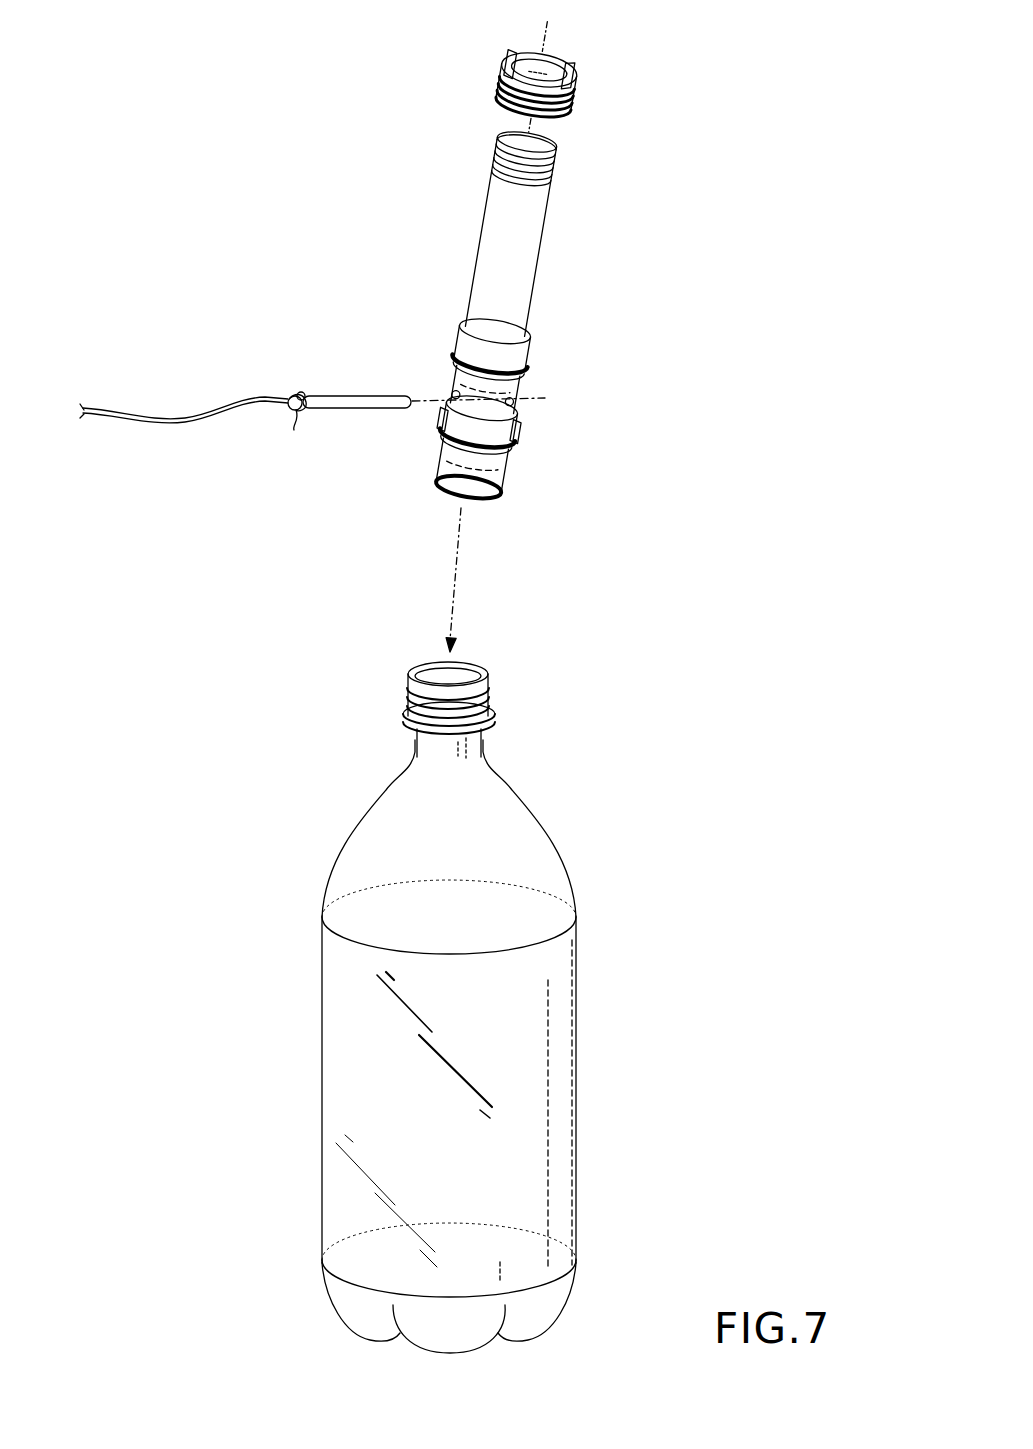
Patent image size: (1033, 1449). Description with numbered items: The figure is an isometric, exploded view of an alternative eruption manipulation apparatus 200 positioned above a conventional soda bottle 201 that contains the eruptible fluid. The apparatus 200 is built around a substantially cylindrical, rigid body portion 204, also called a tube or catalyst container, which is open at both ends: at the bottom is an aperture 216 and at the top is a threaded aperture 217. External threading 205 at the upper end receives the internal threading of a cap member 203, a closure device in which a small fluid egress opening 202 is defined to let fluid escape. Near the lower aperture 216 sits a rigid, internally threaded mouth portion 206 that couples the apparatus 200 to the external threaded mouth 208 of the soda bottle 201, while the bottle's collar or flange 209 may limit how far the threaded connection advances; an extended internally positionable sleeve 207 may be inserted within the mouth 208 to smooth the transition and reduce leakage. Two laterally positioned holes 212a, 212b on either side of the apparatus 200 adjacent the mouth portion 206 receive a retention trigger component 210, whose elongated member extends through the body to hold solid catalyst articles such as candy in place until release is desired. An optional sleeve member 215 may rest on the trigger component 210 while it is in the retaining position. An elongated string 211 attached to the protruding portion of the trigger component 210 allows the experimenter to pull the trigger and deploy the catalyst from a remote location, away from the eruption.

The eruption manipulation apparatus 200 is at (311, 157).
The soda bottle 201 is at (574, 842).
The fluid egress opening 202 is at (550, 65).
The cap member 203 is at (575, 87).
The body portion 204 is at (532, 255).
The external threading 205 is at (560, 158).
The threaded mouth portion 206 is at (460, 428).
The internally positionable sleeve 207 is at (497, 490).
The threaded mouth 208 is at (491, 683).
The collar or flange 209 is at (492, 720).
The retention trigger component 210 is at (318, 393).
The elongated string 211 is at (122, 418).
The first lateral hole 212a is at (456, 394).
The second lateral hole 212b is at (510, 412).
The sleeve member 215 is at (515, 354).
The lower aperture 216 is at (429, 508).
The threaded aperture 217 is at (491, 118).